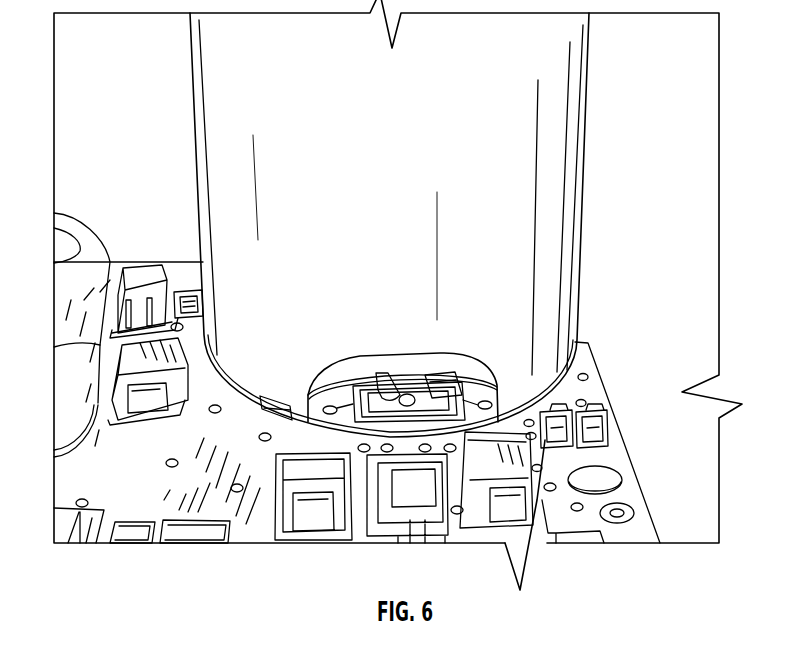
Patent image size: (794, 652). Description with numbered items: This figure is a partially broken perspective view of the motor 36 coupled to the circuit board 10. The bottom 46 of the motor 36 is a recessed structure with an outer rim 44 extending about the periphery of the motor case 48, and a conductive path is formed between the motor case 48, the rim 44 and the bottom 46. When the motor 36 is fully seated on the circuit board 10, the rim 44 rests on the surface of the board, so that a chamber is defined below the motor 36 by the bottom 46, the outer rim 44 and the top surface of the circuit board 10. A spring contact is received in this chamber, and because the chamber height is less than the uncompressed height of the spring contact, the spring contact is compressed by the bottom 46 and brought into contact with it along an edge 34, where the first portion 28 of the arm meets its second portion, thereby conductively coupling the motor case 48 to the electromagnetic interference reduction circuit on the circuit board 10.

The circuit board 10 is at (610, 460).
The first portion 28 is at (388, 380).
The edge 34 is at (410, 380).
The motor 36 is at (432, 225).
The outer rim 44 is at (308, 392).
The bottom 46 is at (440, 380).
The motor case 48 is at (540, 272).